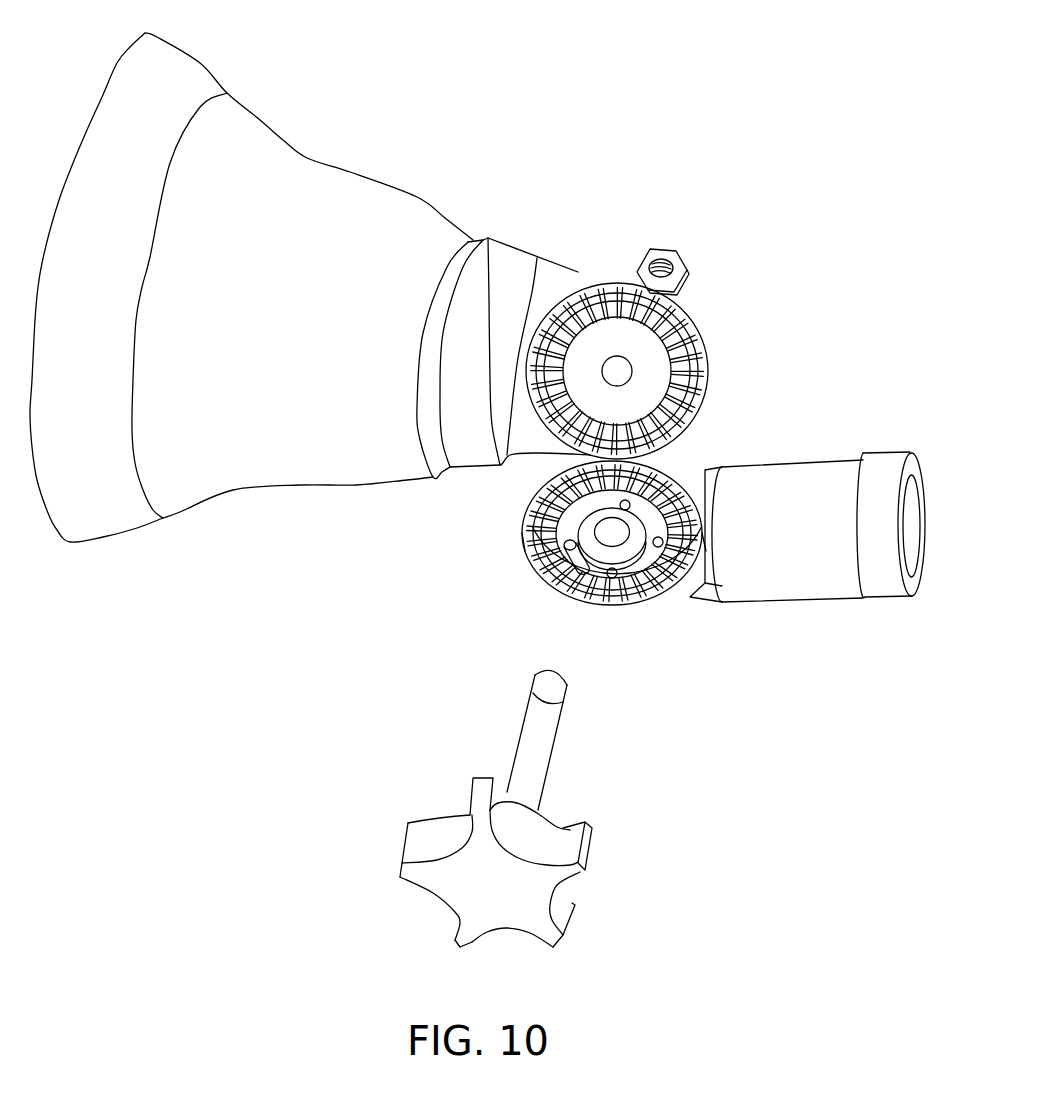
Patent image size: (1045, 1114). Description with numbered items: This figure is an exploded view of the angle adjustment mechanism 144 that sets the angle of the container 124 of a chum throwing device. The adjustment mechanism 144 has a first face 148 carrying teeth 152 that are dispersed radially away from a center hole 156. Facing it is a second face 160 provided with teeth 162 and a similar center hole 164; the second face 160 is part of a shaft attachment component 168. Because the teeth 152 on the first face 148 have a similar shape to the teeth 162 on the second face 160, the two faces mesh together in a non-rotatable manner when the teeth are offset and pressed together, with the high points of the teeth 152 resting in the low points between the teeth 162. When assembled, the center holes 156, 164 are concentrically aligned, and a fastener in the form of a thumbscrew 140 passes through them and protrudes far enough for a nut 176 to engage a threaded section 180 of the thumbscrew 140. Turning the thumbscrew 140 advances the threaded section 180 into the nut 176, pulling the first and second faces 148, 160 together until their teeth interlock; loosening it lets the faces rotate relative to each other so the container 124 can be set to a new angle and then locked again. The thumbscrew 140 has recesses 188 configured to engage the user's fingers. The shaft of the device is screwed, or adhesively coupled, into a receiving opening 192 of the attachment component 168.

The container 124 is at (377, 145).
The thumbscrew 140 is at (449, 853).
The angle adjustment mechanism 144 is at (771, 270).
The first face 148 is at (663, 344).
The teeth 152 is at (710, 357).
The center hole 156 is at (615, 356).
The second face 160 is at (574, 564).
The teeth 162 is at (521, 542).
The center hole 164 is at (618, 538).
The shaft attachment component 168 is at (820, 537).
The nut 176 is at (660, 247).
The threaded section 180 is at (569, 695).
The recesses 188 is at (421, 805).
The receiving opening 192 is at (939, 513).